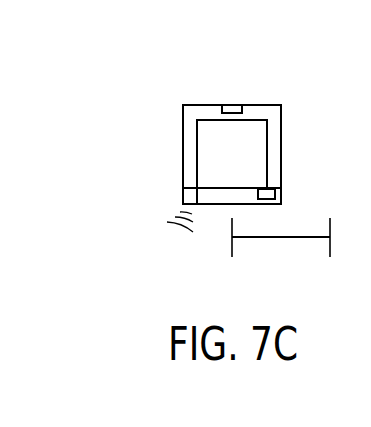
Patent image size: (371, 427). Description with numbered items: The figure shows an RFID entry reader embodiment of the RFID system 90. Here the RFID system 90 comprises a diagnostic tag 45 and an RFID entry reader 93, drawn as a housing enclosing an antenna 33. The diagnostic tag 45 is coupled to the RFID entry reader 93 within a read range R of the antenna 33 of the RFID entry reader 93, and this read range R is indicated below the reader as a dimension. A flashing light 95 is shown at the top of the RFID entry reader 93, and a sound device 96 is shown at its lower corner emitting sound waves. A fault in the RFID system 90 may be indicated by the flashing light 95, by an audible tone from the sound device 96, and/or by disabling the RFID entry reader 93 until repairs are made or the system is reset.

The RFID system 90 is at (140, 90).
The RFID entry reader 93 is at (282, 118).
The antenna 33 is at (268, 157).
The flashing light 95 is at (232, 104).
The diagnostic tag 45 is at (274, 196).
The sound device 96 is at (187, 196).
The read range R is at (281, 238).